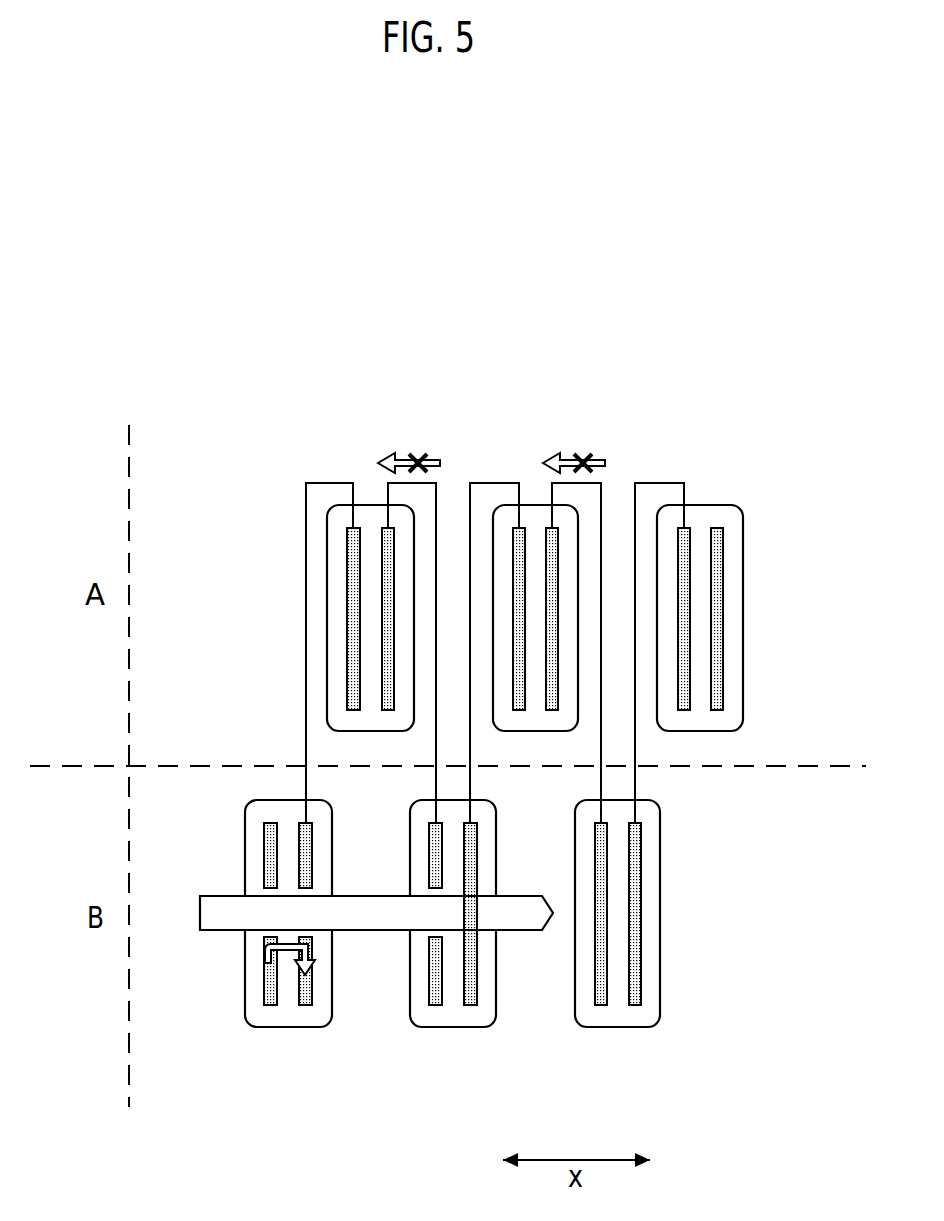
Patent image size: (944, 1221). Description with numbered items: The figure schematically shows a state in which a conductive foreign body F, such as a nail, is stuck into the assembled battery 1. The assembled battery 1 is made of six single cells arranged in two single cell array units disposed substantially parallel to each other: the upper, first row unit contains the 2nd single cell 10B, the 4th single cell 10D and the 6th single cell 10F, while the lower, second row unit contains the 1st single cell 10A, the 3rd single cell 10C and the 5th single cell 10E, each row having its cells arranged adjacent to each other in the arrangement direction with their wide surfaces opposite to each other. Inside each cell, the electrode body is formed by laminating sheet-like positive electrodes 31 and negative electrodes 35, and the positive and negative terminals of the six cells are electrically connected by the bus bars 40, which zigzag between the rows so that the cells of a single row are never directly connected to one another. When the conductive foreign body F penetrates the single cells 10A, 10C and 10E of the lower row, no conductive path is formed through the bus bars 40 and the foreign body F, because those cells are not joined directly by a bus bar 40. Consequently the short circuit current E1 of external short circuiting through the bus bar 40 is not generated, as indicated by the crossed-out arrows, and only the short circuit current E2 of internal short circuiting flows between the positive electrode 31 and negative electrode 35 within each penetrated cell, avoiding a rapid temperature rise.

The assembled battery 1 is at (803, 402).
The 1st single cell 10A is at (285, 955).
The 2nd single cell 10B is at (370, 500).
The 3rd single cell 10C is at (455, 1030).
The 4th single cell 10D is at (538, 500).
The 5th single cell 10E is at (620, 1030).
The 6th single cell 10F is at (700, 500).
The positive electrode 31 is at (262, 998).
The negative electrode 35 is at (284, 1040).
The bus bar 40 is at (305, 557).
The short circuit current of external short circuiting E1 is at (434, 456).
The short circuit current of internal short circuiting E2 is at (265, 962).
The conductive foreign body F is at (218, 896).